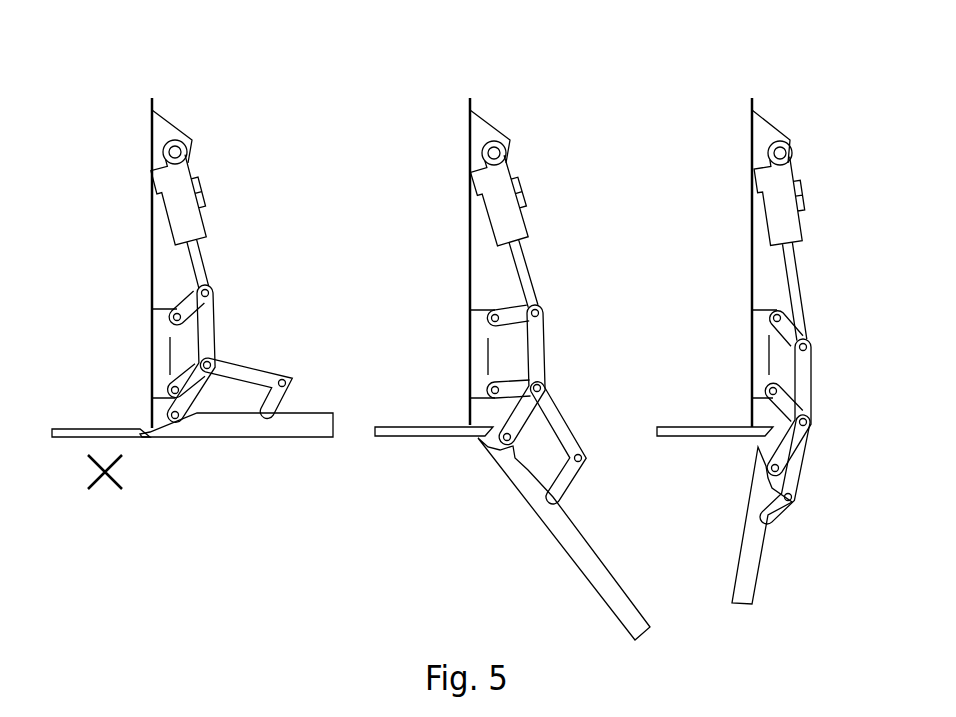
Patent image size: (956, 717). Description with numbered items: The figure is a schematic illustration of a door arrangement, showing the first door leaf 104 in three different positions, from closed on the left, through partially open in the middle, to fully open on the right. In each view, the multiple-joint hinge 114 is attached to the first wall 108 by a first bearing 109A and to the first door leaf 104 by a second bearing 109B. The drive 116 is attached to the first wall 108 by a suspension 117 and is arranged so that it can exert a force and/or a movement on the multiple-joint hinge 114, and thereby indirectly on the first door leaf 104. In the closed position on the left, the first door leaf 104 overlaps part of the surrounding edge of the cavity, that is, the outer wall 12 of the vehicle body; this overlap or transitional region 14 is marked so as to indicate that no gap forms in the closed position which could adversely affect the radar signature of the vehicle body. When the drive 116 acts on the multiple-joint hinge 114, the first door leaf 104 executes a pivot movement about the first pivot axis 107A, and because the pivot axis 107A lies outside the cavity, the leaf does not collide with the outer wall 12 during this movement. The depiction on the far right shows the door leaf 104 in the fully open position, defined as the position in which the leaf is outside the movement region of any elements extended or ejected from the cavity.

The outer wall 12 is at (118, 432).
The transitional region 14 is at (153, 447).
The first door leaf 104 is at (243, 432).
The first pivot axis 107A is at (102, 473).
The first wall 108 is at (152, 240).
The first bearing 109A is at (160, 332).
The second bearing 109B is at (280, 408).
The multiple-joint hinge 114 is at (222, 320).
The drive 116 is at (208, 217).
The suspension 117 is at (168, 122).